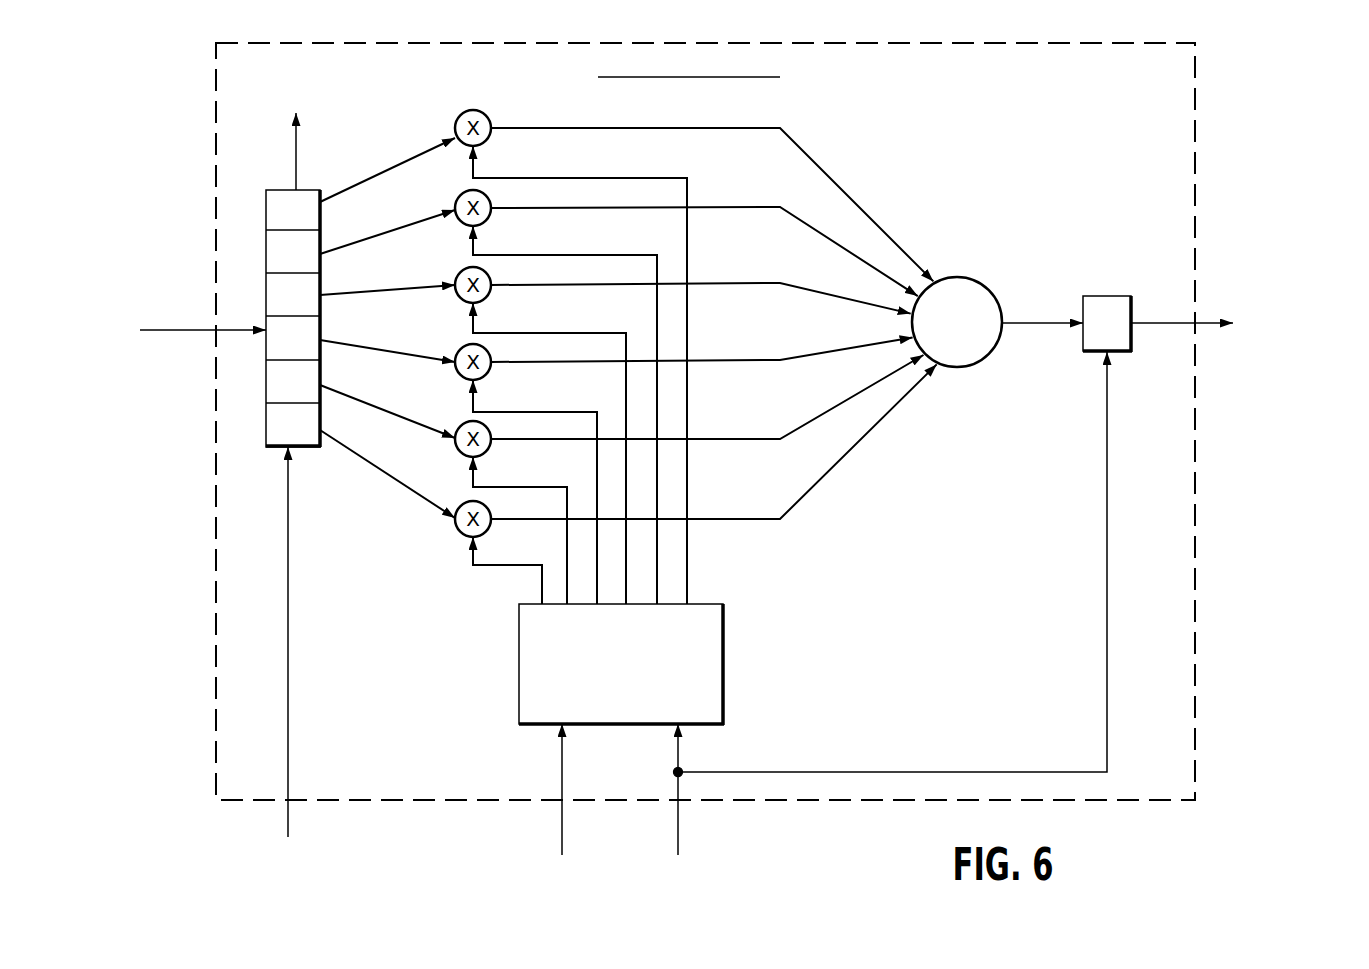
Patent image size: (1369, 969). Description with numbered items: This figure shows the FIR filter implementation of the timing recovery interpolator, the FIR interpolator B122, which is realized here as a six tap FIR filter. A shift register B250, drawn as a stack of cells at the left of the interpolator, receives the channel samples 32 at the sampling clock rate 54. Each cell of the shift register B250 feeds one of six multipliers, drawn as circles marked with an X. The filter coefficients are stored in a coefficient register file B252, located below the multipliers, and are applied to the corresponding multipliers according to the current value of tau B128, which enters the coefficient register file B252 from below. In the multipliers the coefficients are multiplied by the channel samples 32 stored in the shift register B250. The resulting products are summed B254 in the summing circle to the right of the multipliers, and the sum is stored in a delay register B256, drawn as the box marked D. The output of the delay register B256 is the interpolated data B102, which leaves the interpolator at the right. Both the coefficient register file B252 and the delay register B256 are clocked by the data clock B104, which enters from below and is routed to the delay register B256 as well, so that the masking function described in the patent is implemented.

The FIR interpolator B122 is at (232, 90).
The shift register B250 is at (266, 433).
The sampling clock rate 54 is at (185, 331).
The channel samples 32 is at (289, 805).
The coefficient register file B252 is at (724, 638).
The summer B254 is at (1016, 270).
The delay register B256 is at (1083, 347).
The interpolated data B102 is at (1220, 326).
The tau B128 is at (561, 812).
The data clock B104 is at (679, 810).